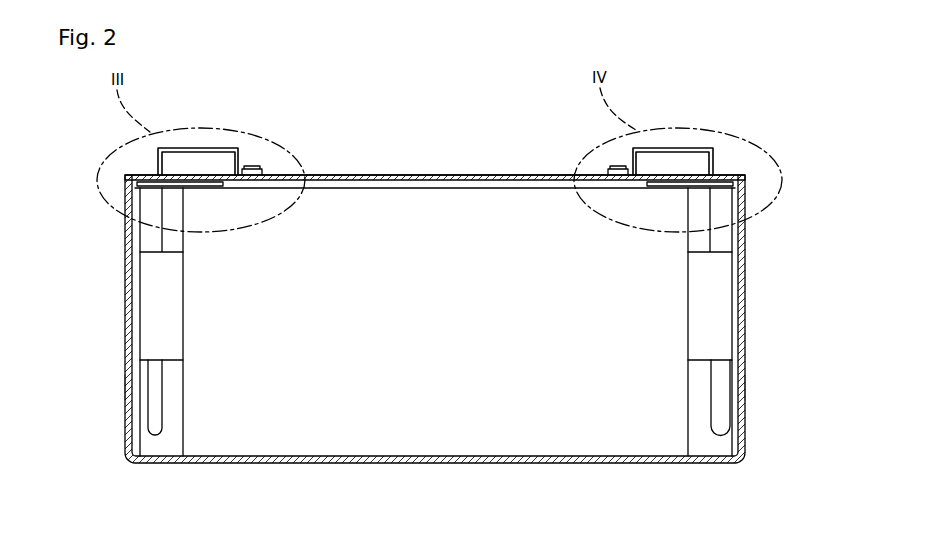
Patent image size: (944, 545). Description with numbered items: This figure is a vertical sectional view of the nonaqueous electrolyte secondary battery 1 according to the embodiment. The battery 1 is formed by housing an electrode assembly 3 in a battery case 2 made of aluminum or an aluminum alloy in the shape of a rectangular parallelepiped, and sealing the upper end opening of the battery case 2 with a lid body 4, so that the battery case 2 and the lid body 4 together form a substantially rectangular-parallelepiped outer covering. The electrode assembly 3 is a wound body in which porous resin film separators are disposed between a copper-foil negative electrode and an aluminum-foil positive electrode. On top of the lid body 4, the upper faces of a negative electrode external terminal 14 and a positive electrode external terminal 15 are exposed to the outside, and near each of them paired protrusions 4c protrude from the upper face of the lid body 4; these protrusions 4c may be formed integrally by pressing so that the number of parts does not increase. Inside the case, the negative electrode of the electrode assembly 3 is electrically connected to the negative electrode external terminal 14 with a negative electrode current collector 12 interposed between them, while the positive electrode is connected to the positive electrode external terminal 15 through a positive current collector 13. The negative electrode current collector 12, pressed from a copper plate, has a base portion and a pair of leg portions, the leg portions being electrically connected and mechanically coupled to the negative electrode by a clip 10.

The nonaqueous electrolyte secondary battery 1 is at (731, 101).
The battery case 2 is at (390, 463).
The electrode assembly 3 is at (455, 445).
The lid body 4 is at (418, 175).
The protrusions 4c is at (252, 167).
The clip 10 is at (160, 300).
The negative electrode current collector 12 is at (137, 389).
The positive current collector 13 is at (737, 389).
The negative electrode external terminal 14 is at (190, 146).
The positive electrode external terminal 15 is at (665, 146).